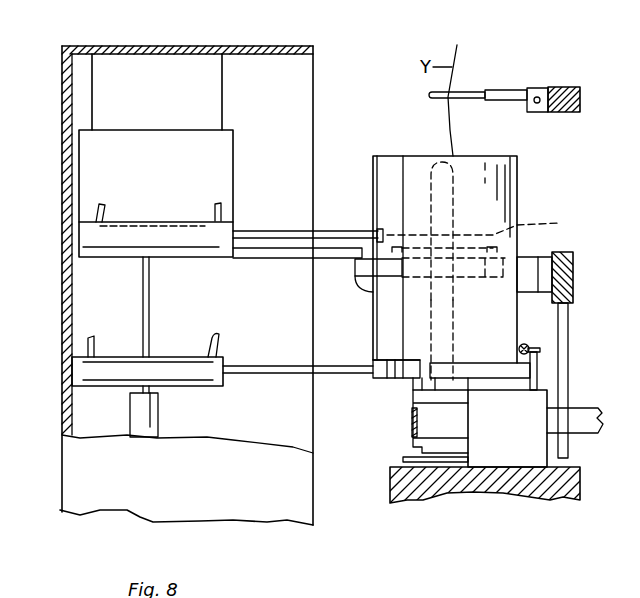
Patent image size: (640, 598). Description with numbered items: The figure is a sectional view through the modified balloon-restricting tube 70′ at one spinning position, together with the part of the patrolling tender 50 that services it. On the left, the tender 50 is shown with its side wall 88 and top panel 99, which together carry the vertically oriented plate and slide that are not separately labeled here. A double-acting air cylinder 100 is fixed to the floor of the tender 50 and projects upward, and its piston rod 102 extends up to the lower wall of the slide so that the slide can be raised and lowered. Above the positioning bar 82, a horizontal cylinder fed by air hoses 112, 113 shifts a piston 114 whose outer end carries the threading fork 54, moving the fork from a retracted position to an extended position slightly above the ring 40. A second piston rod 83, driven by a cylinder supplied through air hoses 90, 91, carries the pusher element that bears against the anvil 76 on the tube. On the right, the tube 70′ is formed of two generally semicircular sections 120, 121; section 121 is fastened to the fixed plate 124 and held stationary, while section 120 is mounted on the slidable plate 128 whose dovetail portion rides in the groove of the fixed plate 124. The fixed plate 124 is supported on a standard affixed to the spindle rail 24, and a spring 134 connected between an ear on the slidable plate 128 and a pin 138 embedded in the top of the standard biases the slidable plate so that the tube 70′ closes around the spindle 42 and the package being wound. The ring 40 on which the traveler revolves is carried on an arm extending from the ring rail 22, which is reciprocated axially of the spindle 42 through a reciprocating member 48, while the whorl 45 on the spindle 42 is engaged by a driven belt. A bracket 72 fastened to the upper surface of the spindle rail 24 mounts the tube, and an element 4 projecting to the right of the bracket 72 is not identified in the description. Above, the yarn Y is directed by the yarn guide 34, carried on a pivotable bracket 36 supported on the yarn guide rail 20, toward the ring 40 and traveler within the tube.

The tender 50 is at (61, 197).
The top panel 99 is at (188, 44).
The side wall 88 is at (73, 92).
The air hose 112 is at (104, 212).
The air hose 113 is at (212, 210).
The piston 114 is at (280, 231).
The positioning bar 82 is at (295, 254).
The piston rod 102 is at (150, 285).
The air hose 90 is at (223, 341).
The air hose 91 is at (98, 337).
The piston rod 83 is at (263, 378).
The double-acting air cylinder 100 is at (148, 422).
The pivotable bracket 36 is at (462, 90).
The yarn guide 34 is at (515, 88).
The yarn guide rail 20 is at (583, 95).
The tube 70' is at (475, 250).
The tube section 121 is at (373, 177).
The tube section 120 is at (511, 212).
The spindle 42 is at (448, 177).
The fixed plate 124 is at (460, 385).
The threading fork 54 is at (490, 226).
The ring 40 is at (497, 251).
The ring rail 22 is at (575, 263).
The reciprocating member 48 is at (569, 377).
The pin 138 is at (539, 360).
The spring 134 is at (530, 346).
The shaft 4 is at (606, 417).
The spindle rail 24 is at (578, 483).
The slidable plate 128 is at (487, 366).
The anvil 76 is at (412, 378).
The whorl 45 is at (432, 427).
The bracket 72 is at (518, 430).